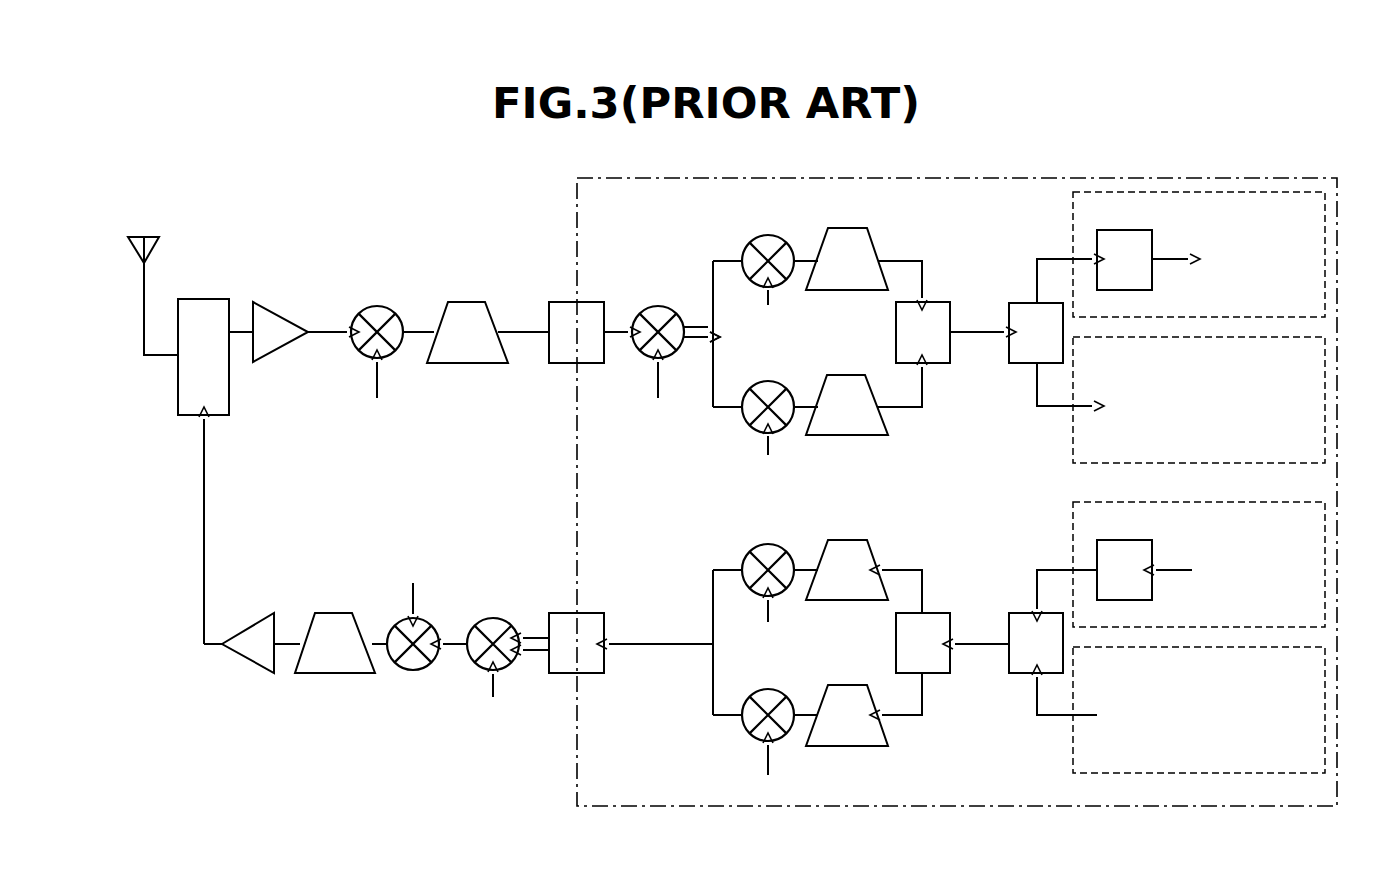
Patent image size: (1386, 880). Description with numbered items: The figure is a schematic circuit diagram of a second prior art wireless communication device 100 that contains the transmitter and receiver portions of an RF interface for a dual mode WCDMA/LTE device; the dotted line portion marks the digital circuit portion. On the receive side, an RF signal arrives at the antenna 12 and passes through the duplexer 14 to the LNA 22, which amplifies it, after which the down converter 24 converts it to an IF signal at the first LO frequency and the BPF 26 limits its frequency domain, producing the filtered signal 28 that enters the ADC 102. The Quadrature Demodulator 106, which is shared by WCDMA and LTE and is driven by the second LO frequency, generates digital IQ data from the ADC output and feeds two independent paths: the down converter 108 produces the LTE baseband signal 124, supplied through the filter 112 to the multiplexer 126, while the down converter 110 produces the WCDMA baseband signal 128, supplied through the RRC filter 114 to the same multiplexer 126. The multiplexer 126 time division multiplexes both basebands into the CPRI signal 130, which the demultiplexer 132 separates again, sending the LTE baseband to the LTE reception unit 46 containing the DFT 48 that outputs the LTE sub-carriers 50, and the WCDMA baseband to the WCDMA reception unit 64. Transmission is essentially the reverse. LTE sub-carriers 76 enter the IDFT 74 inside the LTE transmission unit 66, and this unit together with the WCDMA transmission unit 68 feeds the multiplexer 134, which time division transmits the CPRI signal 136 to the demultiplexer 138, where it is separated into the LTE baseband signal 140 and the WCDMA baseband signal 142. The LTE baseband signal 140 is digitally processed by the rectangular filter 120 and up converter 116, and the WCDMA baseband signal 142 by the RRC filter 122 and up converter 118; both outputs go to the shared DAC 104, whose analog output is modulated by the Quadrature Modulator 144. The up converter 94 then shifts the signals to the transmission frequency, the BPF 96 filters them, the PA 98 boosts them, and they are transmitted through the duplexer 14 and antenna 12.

The antenna 12 is at (130, 257).
The duplexer 14 is at (178, 393).
The LNA 22 is at (285, 318).
The down converter 24 is at (379, 307).
The BPF 26 is at (467, 302).
The filtered intermediate frequency signal 28 is at (520, 331).
The ADC 102 is at (556, 302).
The Quadrature Demodulator 106 is at (660, 302).
The down converter 108 is at (766, 234).
The down converter 110 is at (742, 421).
The filter 112 is at (847, 225).
The RRC filter 114 is at (849, 375).
The baseband signal 124 is at (899, 255).
The multiplexer 126 is at (939, 302).
The baseband signal 128 is at (911, 415).
The CPRI signal 130 is at (975, 336).
The demultiplexer 132 is at (1016, 367).
The LTE reception unit 46 is at (1325, 254).
The DFT 48 is at (1115, 291).
The LTE sub-carriers output 50 is at (1172, 263).
The WCDMA reception unit 64 is at (1325, 400).
The wireless communication device 100 is at (170, 562).
The PA 98 is at (248, 629).
The BPF 96 is at (337, 614).
The up converter 94 is at (431, 625).
The Quadrature Modulator 144 is at (491, 615).
The DAC 104 is at (561, 613).
The up converter 116 is at (766, 542).
The up converter 118 is at (742, 730).
The rectangular filter 120 is at (847, 540).
The RRC filter 122 is at (849, 685).
The LTE baseband signal 140 is at (899, 570).
The WCDMA baseband signal 142 is at (911, 728).
The demultiplexer 138 is at (942, 613).
The CPRI signal 136 is at (975, 648).
The multiplexer 134 is at (1016, 677).
The LTE transmission unit 66 is at (1325, 564).
The IDFT unit 74 is at (1115, 601).
The LTE sub-carriers input 76 is at (1172, 573).
The WCDMA transmission unit 68 is at (1325, 710).